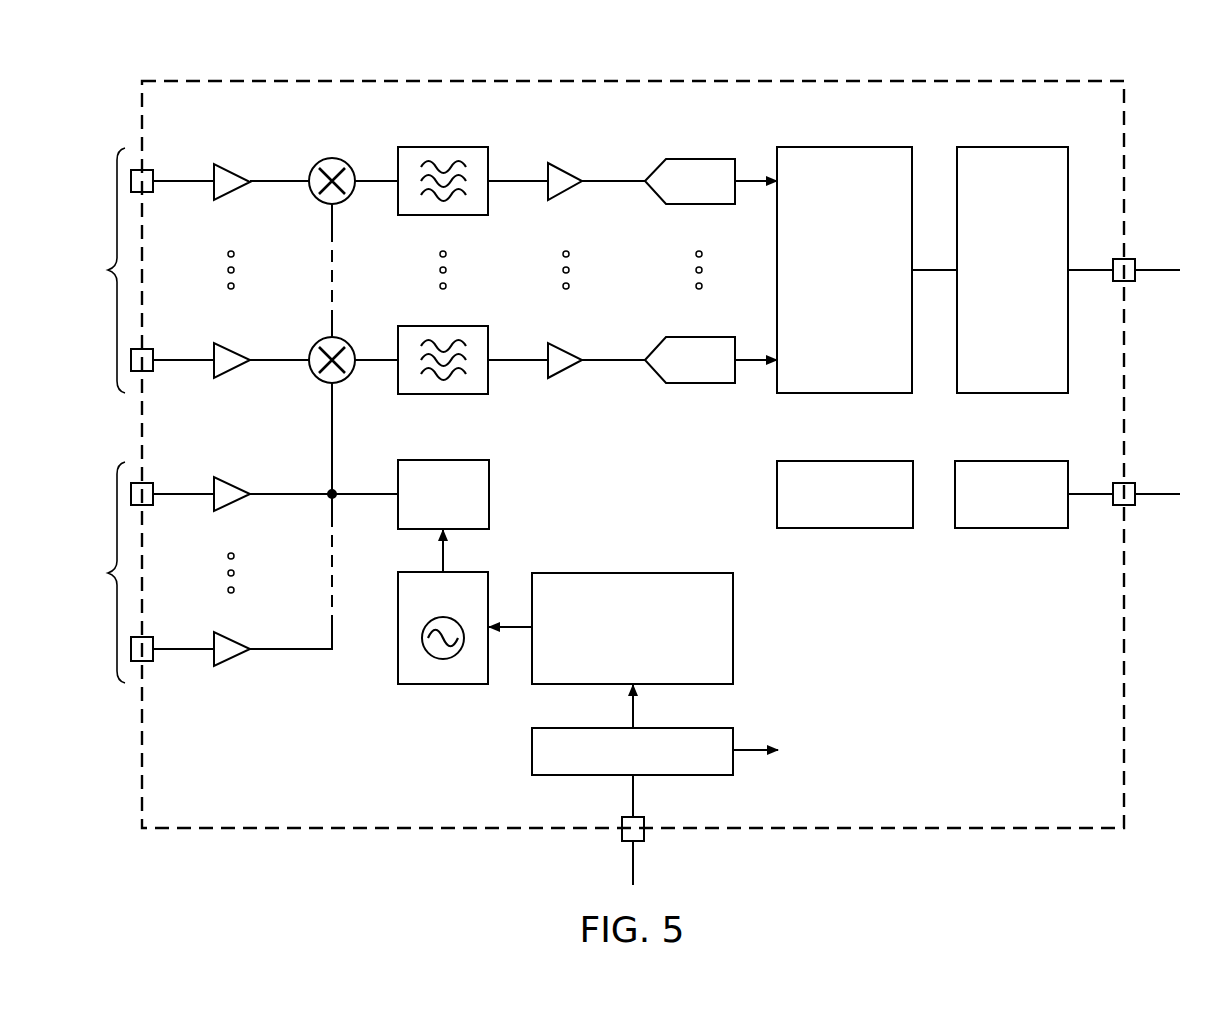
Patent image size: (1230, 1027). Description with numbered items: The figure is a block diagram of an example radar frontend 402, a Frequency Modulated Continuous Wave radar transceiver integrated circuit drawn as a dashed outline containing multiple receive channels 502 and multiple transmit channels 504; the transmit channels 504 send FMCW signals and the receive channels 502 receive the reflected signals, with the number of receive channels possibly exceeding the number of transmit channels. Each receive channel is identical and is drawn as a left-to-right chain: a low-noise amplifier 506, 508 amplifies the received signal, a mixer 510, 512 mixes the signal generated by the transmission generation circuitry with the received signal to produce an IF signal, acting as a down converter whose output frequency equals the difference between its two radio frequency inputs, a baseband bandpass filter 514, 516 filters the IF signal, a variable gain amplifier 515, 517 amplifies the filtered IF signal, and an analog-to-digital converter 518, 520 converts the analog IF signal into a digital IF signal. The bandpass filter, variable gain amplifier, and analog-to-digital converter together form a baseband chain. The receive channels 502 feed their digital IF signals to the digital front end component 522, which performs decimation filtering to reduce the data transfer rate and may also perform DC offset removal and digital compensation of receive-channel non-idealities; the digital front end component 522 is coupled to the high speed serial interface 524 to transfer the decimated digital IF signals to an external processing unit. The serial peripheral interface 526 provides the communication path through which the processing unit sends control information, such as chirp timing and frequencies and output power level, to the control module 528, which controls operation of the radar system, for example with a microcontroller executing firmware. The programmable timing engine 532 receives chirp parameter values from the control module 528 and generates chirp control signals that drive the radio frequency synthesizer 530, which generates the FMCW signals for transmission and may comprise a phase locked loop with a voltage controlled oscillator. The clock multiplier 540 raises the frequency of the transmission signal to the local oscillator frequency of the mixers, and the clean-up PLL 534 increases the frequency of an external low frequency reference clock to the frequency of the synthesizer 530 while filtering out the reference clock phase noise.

The radar frontend 402 is at (360, 78).
The receive channels 502 is at (105, 270).
The transmit channels 504 is at (105, 572).
The low-noise amplifier 506 is at (231, 164).
The low-noise amplifier 508 is at (240, 353).
The mixer 510 is at (317, 159).
The mixer 512 is at (320, 381).
The baseband bandpass filter 514 is at (425, 147).
The variable gain amplifier 515 is at (568, 164).
The baseband bandpass filter 516 is at (422, 326).
The variable gain amplifier 517 is at (568, 376).
The analog-to-digital converter 518 is at (702, 159).
The analog-to-digital converter 520 is at (702, 383).
The digital front end component 522 is at (845, 147).
The high speed serial interface 524 is at (1012, 147).
The serial peripheral interface 526 is at (1012, 528).
The control module 528 is at (845, 528).
The radio frequency synthesizer 530 is at (431, 684).
The programmable timing engine 532 is at (733, 638).
The clean-up PLL 534 is at (733, 762).
The clock multiplier 540 is at (489, 508).